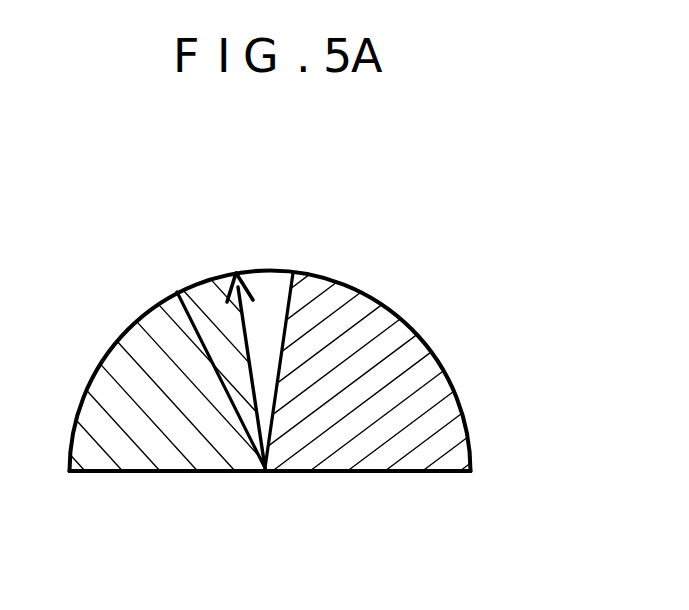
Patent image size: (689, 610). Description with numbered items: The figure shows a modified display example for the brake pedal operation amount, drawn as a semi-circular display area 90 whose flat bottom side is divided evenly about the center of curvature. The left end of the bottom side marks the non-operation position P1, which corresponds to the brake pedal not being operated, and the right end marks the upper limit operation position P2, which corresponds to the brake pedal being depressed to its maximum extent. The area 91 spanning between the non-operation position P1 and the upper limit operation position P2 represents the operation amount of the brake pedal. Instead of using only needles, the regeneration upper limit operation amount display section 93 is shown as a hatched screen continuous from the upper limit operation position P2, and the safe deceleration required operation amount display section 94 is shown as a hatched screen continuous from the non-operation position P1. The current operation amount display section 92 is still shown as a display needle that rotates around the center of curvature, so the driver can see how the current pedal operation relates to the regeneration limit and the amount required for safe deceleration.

The display area 90 is at (422, 329).
The area 91 is at (458, 385).
The current operation amount display section 92 is at (250, 342).
The regeneration upper limit operation amount display section 93 is at (278, 273).
The safe deceleration required operation amount display section 94 is at (193, 320).
The non-operation position P1 is at (162, 474).
The upper limit operation position P2 is at (357, 474).